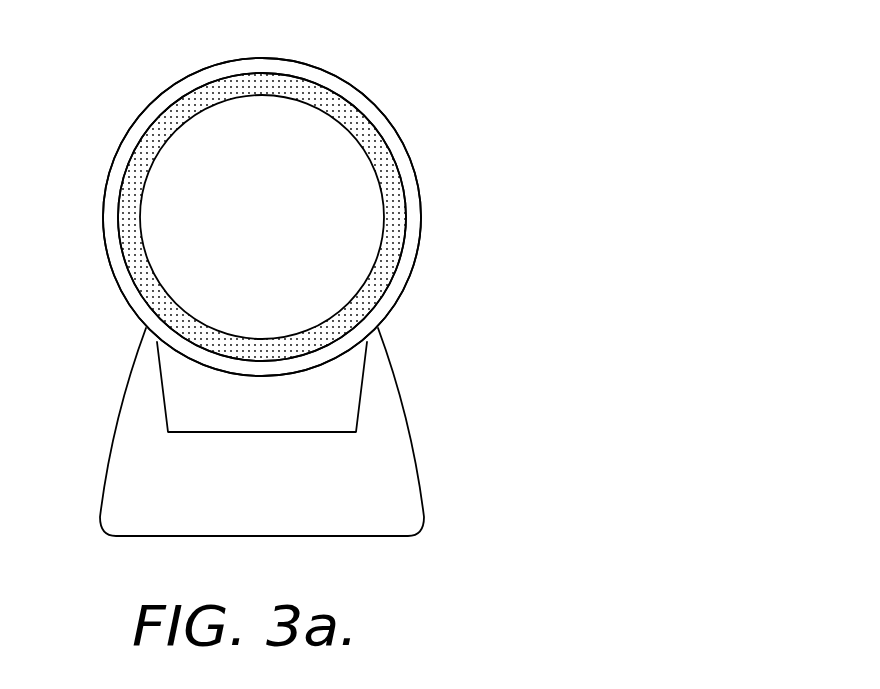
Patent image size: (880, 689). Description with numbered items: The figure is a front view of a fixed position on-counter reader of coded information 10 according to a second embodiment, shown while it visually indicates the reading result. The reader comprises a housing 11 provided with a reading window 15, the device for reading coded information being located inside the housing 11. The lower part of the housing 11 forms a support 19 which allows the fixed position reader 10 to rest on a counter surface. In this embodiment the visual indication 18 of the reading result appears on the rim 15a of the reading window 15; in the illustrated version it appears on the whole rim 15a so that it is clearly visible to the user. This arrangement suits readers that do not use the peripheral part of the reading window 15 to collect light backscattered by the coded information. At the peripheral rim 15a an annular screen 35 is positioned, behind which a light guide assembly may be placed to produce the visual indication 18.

The fixed position reader of coded information 10 is at (405, 63).
The housing 11 is at (105, 240).
The reading window 15 is at (350, 187).
The rim of the reading window 15a is at (176, 105).
The visual indication of the reading result 18 is at (390, 243).
The annular screen 35 is at (262, 217).
The support 19 is at (396, 470).